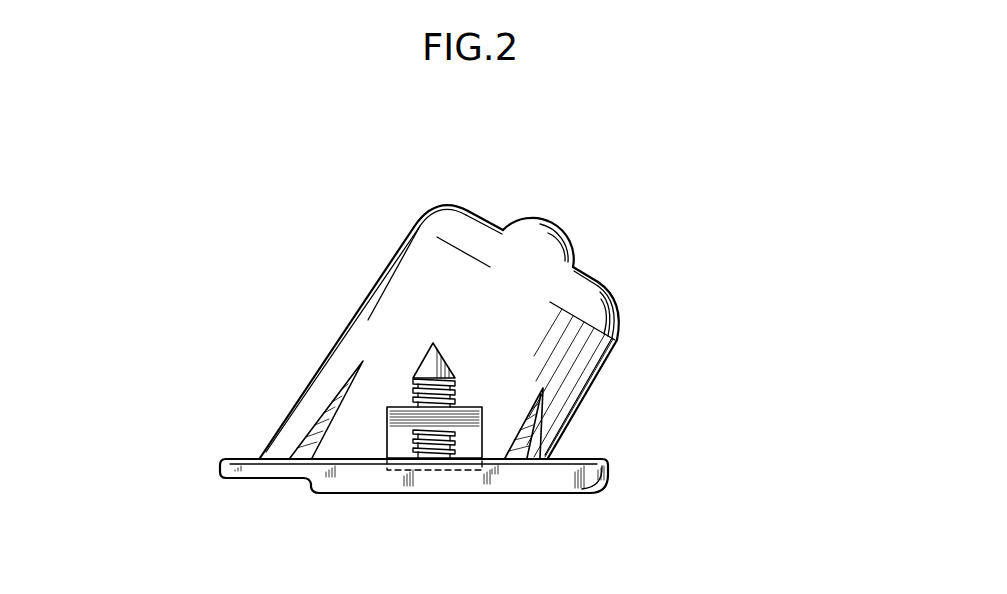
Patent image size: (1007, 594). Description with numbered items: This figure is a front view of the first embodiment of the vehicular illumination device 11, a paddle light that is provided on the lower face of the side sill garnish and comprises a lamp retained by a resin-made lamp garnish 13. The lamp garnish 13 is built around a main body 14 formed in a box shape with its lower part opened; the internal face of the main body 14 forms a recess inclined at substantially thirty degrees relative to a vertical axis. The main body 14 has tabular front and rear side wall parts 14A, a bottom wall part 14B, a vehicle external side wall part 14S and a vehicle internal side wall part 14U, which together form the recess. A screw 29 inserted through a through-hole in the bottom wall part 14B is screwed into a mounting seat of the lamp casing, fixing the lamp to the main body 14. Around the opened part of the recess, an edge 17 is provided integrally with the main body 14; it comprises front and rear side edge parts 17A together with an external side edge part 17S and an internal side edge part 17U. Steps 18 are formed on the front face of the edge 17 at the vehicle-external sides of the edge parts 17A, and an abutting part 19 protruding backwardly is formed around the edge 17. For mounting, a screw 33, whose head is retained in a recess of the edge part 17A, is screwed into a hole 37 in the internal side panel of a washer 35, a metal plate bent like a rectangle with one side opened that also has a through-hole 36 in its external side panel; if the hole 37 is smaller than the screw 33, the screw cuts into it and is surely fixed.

The vehicular illumination device 11 is at (648, 245).
The lamp garnish 13 is at (431, 193).
The main body 14 is at (616, 310).
The front and rear side wall parts 14A is at (437, 291).
The bottom wall part 14B is at (473, 207).
The vehicle external side wall part 14S is at (341, 326).
The vehicle internal side wall part 14U is at (616, 357).
The screw 29 is at (547, 227).
The screw 33 is at (441, 355).
The washer 35 is at (484, 450).
The hole 37 is at (446, 426).
The through-hole 36 is at (452, 472).
The edge 17 is at (609, 482).
The external side edge part 17S is at (232, 480).
The front side edge part and rear side edge part 17A is at (340, 495).
The internal side edge part 17U is at (575, 495).
The steps 18 is at (303, 496).
The abutting part 19 is at (597, 458).